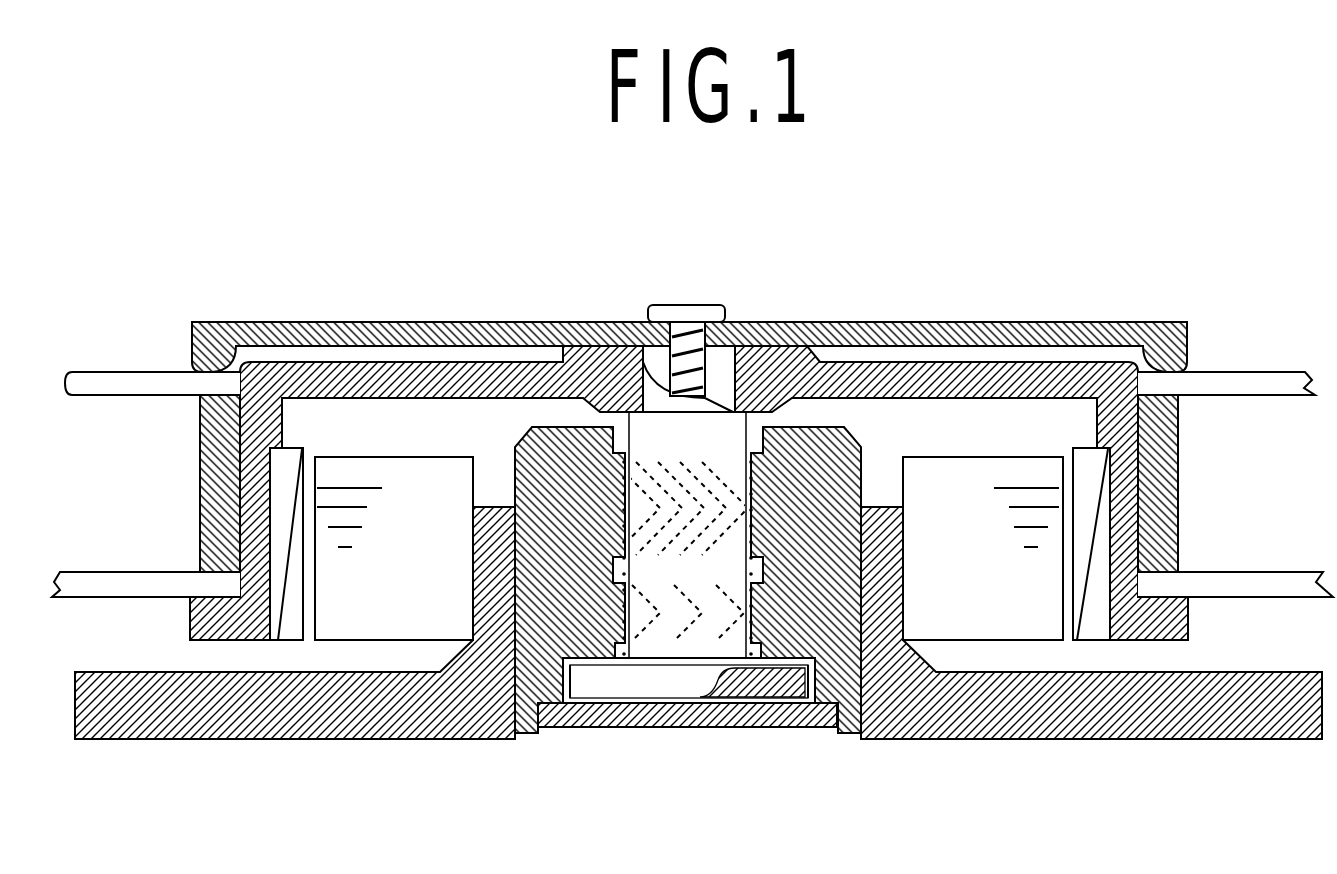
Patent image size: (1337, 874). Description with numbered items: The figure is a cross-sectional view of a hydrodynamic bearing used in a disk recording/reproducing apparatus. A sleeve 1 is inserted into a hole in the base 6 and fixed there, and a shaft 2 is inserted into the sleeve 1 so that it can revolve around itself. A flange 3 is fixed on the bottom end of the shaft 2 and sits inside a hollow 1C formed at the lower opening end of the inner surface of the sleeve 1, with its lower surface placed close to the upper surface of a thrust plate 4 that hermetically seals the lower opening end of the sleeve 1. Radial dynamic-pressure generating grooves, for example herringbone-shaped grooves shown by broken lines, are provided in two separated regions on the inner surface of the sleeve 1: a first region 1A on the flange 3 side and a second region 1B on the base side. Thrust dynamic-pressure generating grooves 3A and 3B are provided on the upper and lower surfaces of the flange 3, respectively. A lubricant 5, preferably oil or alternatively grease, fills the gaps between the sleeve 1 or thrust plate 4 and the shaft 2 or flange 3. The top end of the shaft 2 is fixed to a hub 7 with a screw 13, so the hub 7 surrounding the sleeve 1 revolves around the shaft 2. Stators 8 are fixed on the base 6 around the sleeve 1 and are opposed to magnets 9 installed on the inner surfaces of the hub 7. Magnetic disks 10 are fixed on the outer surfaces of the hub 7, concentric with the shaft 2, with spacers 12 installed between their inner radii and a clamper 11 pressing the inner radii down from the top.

The sleeve 1 is at (523, 437).
The first region 1A is at (648, 598).
The second region 1B is at (650, 497).
The hollow 1C is at (580, 678).
The shaft 2 is at (687, 438).
The flange 3 is at (662, 680).
The thrust dynamic-pressure generating groove 3A is at (765, 690).
The thrust dynamic-pressure generating groove 3B is at (772, 640).
The thrust plate 4 is at (687, 728).
The lubricant 5 is at (758, 558).
The base 6 is at (365, 708).
The hub 7 is at (397, 378).
The stators 8 is at (395, 572).
The magnets 9 is at (287, 600).
The magnetic disks 10 is at (137, 385).
The clamper 11 is at (222, 347).
The spacers 12 is at (201, 440).
The screw 13 is at (693, 312).